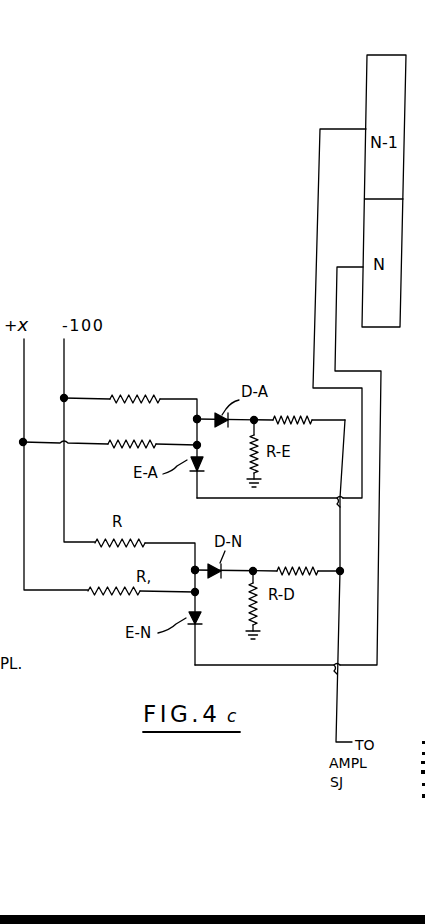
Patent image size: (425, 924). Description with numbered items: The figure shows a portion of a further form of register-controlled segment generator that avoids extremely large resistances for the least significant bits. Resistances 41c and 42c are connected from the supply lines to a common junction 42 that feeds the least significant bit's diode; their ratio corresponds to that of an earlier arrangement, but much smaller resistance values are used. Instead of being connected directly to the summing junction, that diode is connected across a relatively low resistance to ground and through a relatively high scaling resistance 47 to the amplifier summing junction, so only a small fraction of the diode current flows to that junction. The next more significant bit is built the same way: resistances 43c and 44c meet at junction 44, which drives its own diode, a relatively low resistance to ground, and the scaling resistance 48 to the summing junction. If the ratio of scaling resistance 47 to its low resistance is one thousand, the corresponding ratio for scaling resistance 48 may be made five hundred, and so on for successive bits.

The resistor 43c is at (113, 396).
The resistor 44c is at (111, 444).
The junction node 44 is at (202, 417).
The scaling resistance 48 is at (292, 410).
The resistance 41c is at (138, 542).
The resistance 42c is at (141, 589).
The junction node 42 is at (197, 571).
The scaling resistance 47 is at (278, 568).